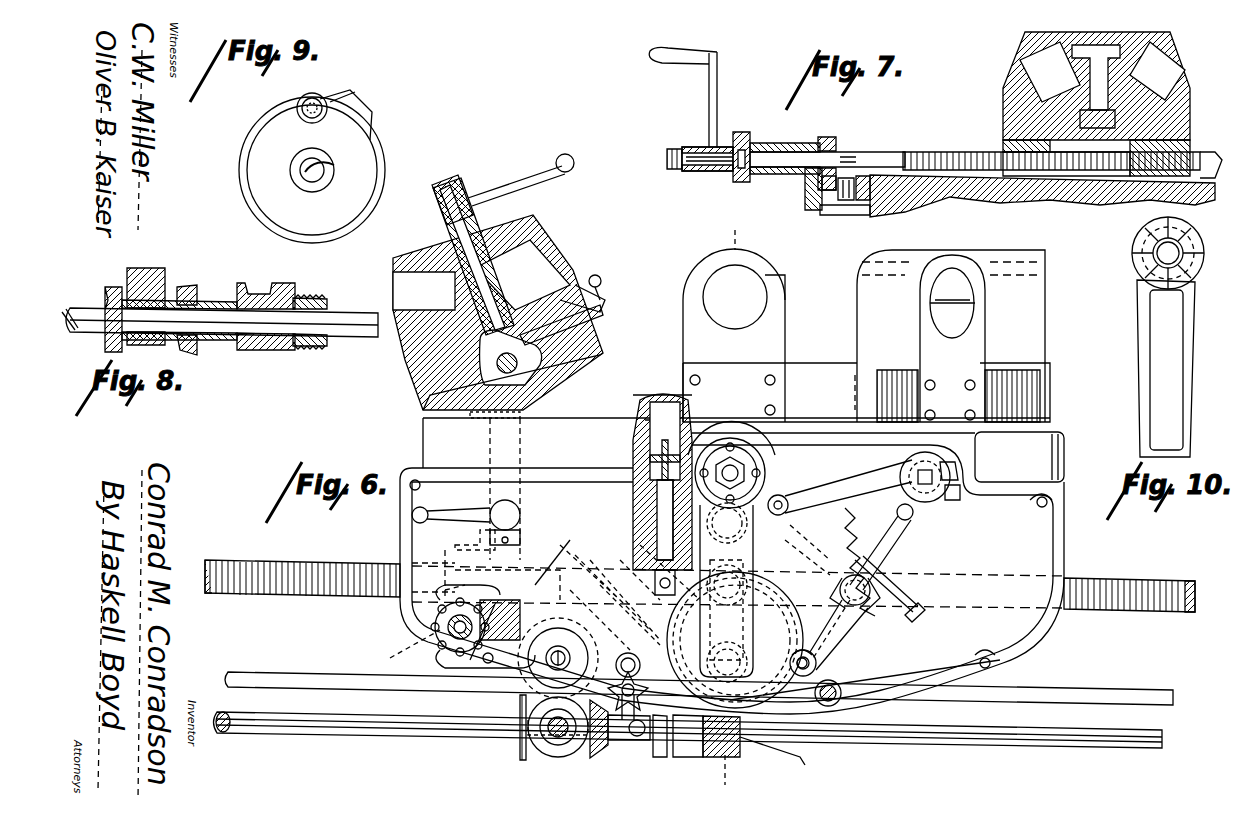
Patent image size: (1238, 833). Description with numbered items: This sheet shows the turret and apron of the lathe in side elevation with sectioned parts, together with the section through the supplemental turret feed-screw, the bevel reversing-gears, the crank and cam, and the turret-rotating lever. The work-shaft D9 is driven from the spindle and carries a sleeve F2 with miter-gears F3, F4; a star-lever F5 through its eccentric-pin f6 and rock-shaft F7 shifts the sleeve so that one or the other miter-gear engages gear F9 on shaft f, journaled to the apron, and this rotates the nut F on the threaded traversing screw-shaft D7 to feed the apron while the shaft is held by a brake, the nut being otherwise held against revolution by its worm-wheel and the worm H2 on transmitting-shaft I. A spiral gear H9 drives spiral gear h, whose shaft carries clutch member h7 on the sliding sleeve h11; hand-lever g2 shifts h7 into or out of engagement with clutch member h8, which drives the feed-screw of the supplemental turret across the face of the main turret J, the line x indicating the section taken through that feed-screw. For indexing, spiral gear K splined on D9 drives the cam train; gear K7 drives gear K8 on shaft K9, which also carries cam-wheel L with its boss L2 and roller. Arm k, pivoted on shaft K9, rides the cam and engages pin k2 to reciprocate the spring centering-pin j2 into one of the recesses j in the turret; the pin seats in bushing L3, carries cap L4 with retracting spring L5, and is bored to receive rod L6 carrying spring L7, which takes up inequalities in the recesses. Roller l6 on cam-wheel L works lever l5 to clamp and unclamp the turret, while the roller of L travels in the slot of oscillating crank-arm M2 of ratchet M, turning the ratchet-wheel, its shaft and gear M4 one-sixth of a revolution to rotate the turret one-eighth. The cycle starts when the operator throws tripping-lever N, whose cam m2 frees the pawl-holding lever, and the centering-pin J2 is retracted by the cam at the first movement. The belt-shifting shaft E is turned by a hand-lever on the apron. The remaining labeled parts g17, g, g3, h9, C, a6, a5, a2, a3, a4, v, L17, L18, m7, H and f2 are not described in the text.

In FIG. 9, the cam-wheel L is at (312, 170).
In FIG. 6, the cam-wheel L is at (800, 546).
In FIG. 9, the boss L2 is at (360, 93).
In FIG. 6, the boss L2 is at (822, 516).
In FIG. 9, the shaft K9 is at (310, 175).
In FIG. 6, the shaft K9 is at (755, 570).
In FIG. 8, the work-shaft D9 is at (333, 310).
In FIG. 6, the work-shaft D9 is at (935, 740).
In FIG. 8, the miter-gear F4 is at (107, 295).
In FIG. 6, the miter-gear F4 is at (520, 745).
In FIG. 8, the miter-gear F3 is at (200, 282).
In FIG. 6, the miter-gear F3 is at (598, 760).
In FIG. 8, the sleeve F2 is at (205, 342).
In FIG. 6, the sleeve F2 is at (620, 742).
In FIG. 8, the spiral gear K is at (310, 350).
In FIG. 6, the spiral gear K is at (742, 755).
In FIG. 7, the crank handle g17 is at (668, 62).
In FIG. 7, the collar g is at (838, 134).
In FIG. 7, the screw end g3 is at (1214, 148).
In FIG. 7, the slide base h9 is at (920, 215).
In FIG. 6, the slide base h9 is at (514, 381).
In FIG. 7, the sleeve h11 is at (805, 205).
In FIG. 6, the sleeve h11 is at (505, 489).
In FIG. 7, the clutch member h8 is at (830, 218).
In FIG. 6, the clutch member h8 is at (545, 418).
In FIG. 10, the ratchet M is at (1133, 258).
In FIG. 6, the ratchet M is at (757, 450).
In FIG. 10, the crank-arm M2 is at (1160, 354).
In FIG. 6, the crank-arm M2 is at (830, 612).
In FIG. 6, the gear M4 is at (840, 680).
In FIG. 6, the frame C is at (400, 518).
In FIG. 6, the main turret J is at (866, 392).
In FIG. 6, the centering-pin J2 is at (864, 335).
In FIG. 6, the tool block a6 is at (480, 292).
In FIG. 6, the clamp screw a5 is at (480, 228).
In FIG. 6, the adjusting rod a2 is at (585, 292).
In FIG. 6, the knob a3 is at (605, 285).
In FIG. 6, the clamp bar a4 is at (605, 345).
In FIG. 6, the screw head v is at (445, 180).
In FIG. 6, the clutch member h7 is at (482, 424).
In FIG. 6, the recesses j is at (645, 395).
In FIG. 6, the spring centering-pin j2 is at (640, 422).
In FIG. 6, the spring L7 is at (633, 462).
In FIG. 6, the bushing L3 is at (635, 495).
In FIG. 6, the spring L5 is at (660, 530).
In FIG. 6, the rod L6 is at (640, 520).
In FIG. 6, the cap L4 is at (650, 572).
In FIG. 6, the pin k2 is at (655, 598).
In FIG. 6, the arm k is at (610, 592).
In FIG. 6, the gear K8 is at (740, 585).
In FIG. 6, the gear K7 is at (795, 650).
In FIG. 6, the roller l6 is at (798, 480).
In FIG. 6, the lever l5 is at (864, 488).
In FIG. 6, the pulley L17 is at (935, 460).
In FIG. 6, the lever L18 is at (915, 528).
In FIG. 6, the tripping-lever N is at (876, 548).
In FIG. 6, the cam m2 is at (908, 598).
In FIG. 6, the pivot m7 is at (870, 608).
In FIG. 6, the traversing screw-shaft D7 is at (340, 600).
In FIG. 6, the belt-shifting shaft E is at (268, 680).
In FIG. 6, the spiral gear H9 is at (435, 620).
In FIG. 6, the spiral gear h is at (440, 664).
In FIG. 6, the transmitting-shaft I is at (415, 646).
In FIG. 6, the nut F is at (455, 555).
In FIG. 6, the hand-lever g2 is at (466, 515).
In FIG. 6, the worm H2 is at (520, 700).
In FIG. 6, the gear H is at (530, 690).
In FIG. 6, the eccentric-pin f6 is at (468, 700).
In FIG. 6, the rock-shaft F7 is at (640, 665).
In FIG. 6, the star-lever F5 is at (645, 695).
In FIG. 6, the miter-gear F9 is at (570, 760).
In FIG. 6, the shaft f is at (545, 755).
In FIG. 6, the pin f2 is at (552, 758).
In FIG. 6, the section line x is at (729, 506).